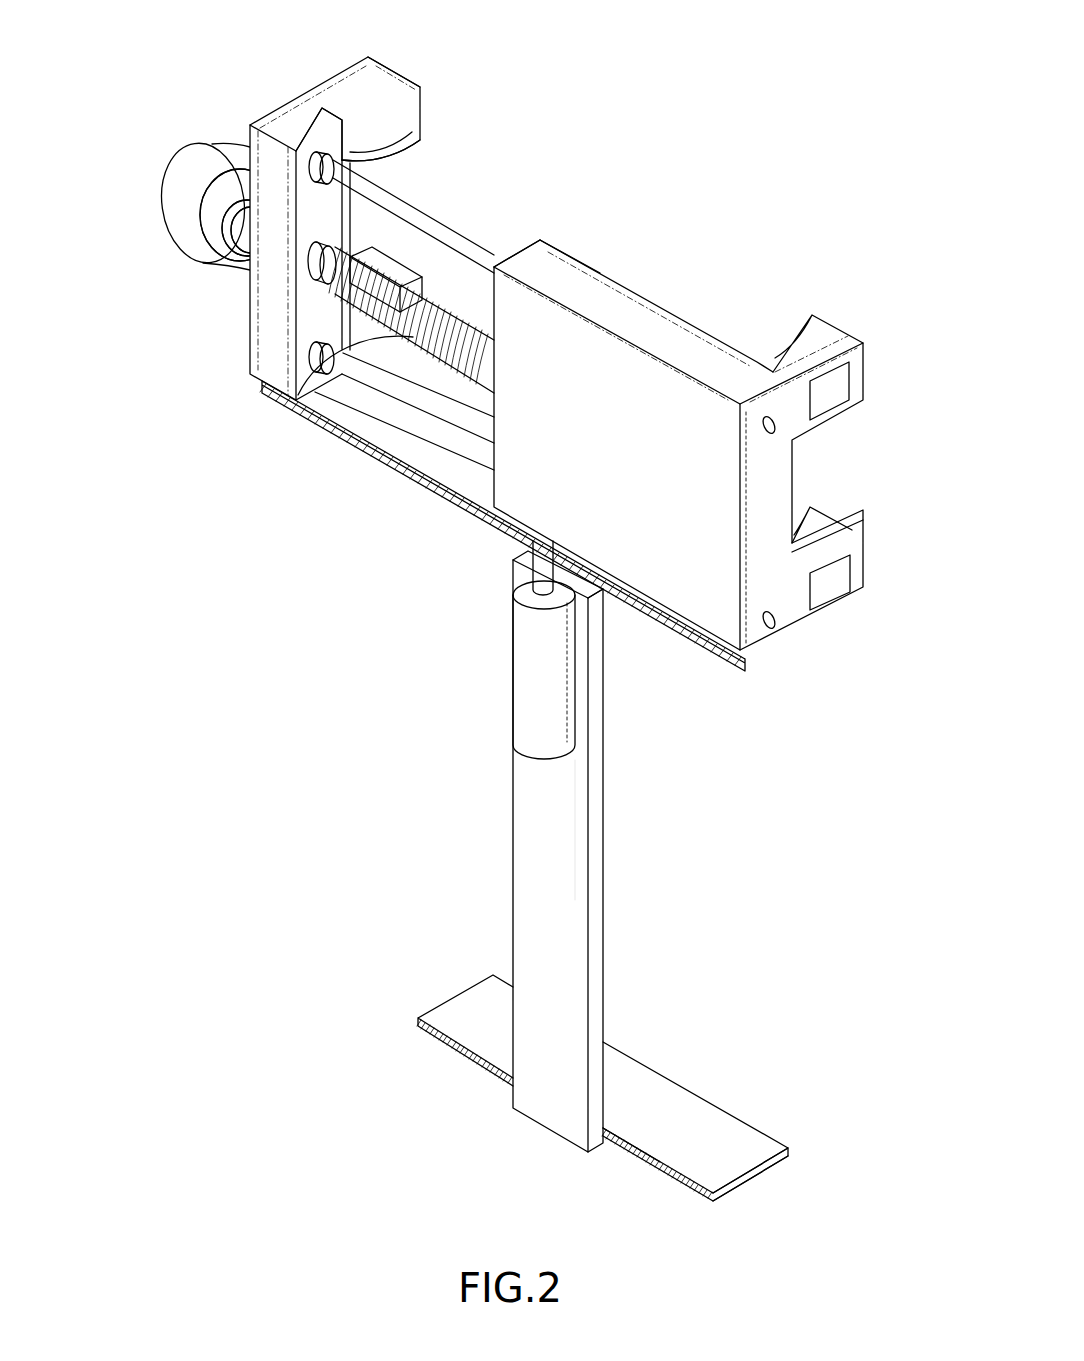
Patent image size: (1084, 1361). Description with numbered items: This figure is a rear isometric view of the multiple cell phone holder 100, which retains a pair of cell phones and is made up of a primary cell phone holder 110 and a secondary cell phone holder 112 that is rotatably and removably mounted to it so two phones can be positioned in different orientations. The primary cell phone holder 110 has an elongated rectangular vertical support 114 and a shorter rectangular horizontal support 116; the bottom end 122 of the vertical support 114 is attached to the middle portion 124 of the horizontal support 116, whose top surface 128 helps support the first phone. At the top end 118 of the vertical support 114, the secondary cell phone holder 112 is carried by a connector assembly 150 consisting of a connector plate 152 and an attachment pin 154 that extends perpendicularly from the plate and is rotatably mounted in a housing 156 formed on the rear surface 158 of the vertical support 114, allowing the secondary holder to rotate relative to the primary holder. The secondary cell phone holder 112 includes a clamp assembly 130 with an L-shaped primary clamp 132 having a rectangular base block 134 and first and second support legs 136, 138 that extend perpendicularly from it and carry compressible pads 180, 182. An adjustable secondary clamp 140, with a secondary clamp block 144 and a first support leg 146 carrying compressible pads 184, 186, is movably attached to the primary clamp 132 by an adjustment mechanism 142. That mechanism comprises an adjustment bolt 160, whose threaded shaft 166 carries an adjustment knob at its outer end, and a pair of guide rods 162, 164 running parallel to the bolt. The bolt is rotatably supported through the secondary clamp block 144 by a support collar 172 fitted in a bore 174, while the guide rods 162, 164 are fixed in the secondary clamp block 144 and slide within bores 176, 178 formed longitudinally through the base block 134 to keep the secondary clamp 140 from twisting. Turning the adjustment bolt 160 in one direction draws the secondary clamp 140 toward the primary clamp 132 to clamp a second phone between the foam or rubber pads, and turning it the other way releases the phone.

The multiple cell phone holder 100 is at (718, 186).
The primary cell phone holder 110 is at (345, 953).
The secondary cell phone holder 112 is at (212, 494).
The vertical support 114 is at (600, 918).
The horizontal support 116 is at (705, 1107).
The top end 118 is at (597, 620).
The bottom end 122 is at (548, 1112).
The middle portion 124 is at (622, 1125).
The top surface 128 is at (730, 1165).
The clamp assembly 130 is at (287, 583).
The primary clamp 132 is at (870, 318).
The base block 134 is at (680, 325).
The first support leg 136 is at (860, 385).
The second support leg 138 is at (865, 578).
The adjustable secondary clamp 140 is at (126, 138).
The adjustment mechanism 142 is at (287, 75).
The secondary clamp block 144 is at (268, 302).
The first support leg 146 is at (368, 60).
The connector assembly 150 is at (455, 615).
The connector plate 152 is at (437, 468).
The attachment pin 154 is at (540, 577).
The housing 156 is at (528, 683).
The rear surface 158 is at (528, 828).
The adjustment bolt 160 is at (150, 216).
The guide rod 162 is at (484, 248).
The guide rod 164 is at (400, 414).
The threaded shaft 166 is at (413, 337).
The support collar 172 is at (347, 226).
The bore 174 is at (302, 262).
The bore 176 is at (776, 425).
The bore 178 is at (773, 625).
The compressible pad 180 is at (820, 305).
The compressible pad 182 is at (822, 518).
The compressible pad 184 is at (405, 118).
The compressible pad 186 is at (397, 270).